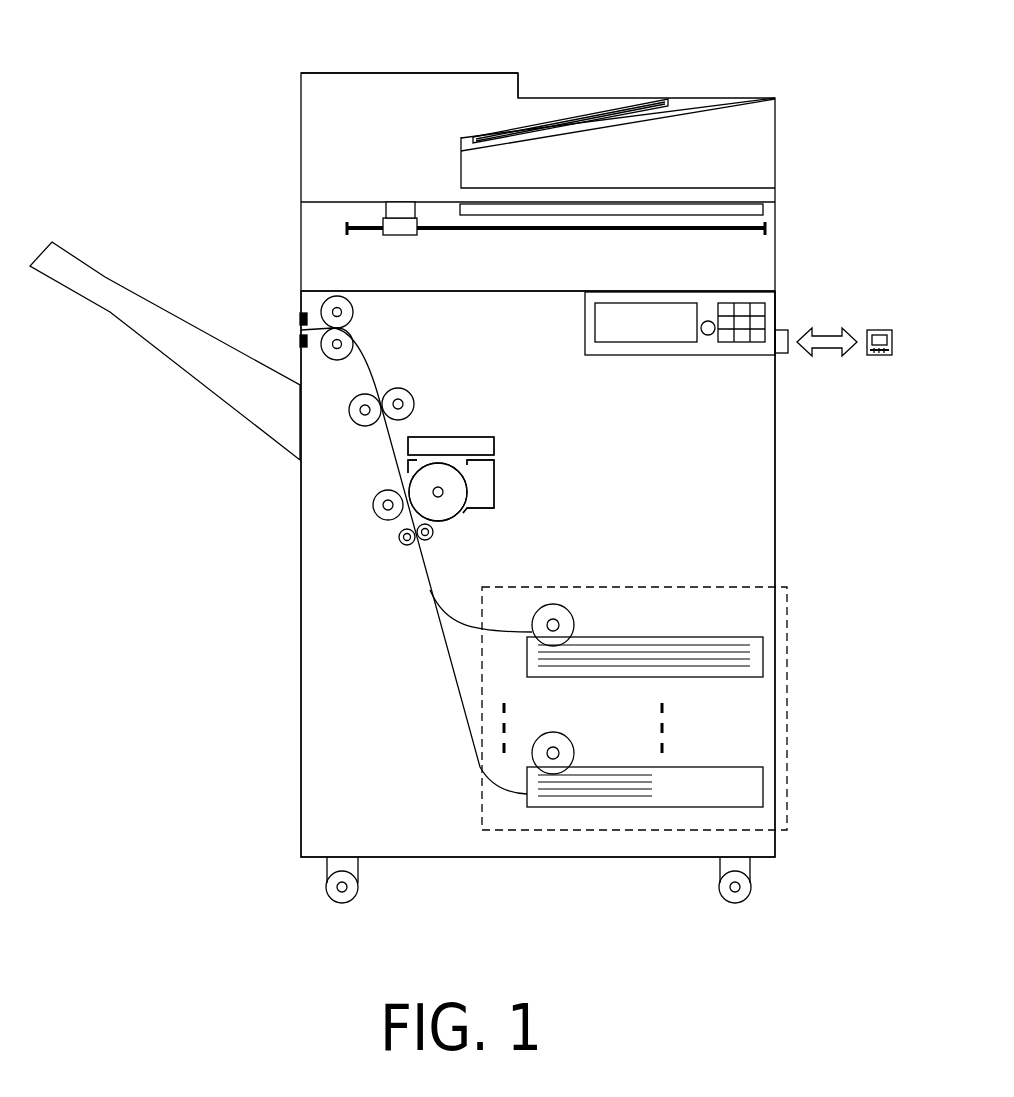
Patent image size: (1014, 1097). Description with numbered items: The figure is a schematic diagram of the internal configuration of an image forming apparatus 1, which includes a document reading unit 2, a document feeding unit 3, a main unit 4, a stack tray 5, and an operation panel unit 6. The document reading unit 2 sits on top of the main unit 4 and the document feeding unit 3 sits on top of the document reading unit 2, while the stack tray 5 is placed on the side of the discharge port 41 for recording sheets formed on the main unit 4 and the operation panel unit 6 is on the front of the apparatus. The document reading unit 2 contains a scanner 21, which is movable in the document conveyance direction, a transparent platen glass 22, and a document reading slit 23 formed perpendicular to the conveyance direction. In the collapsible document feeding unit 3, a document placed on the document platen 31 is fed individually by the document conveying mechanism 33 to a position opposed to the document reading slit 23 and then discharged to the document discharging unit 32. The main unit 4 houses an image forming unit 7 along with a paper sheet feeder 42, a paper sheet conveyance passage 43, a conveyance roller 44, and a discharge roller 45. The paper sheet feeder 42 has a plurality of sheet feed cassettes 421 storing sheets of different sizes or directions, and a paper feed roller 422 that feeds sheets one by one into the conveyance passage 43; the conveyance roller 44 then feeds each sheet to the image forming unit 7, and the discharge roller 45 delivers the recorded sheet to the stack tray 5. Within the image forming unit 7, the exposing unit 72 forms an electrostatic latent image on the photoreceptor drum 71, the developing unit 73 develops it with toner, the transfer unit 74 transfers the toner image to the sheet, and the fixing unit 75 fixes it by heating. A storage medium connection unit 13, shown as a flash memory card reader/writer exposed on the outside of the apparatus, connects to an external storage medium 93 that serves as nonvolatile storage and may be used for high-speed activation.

The image forming apparatus 1 is at (237, 108).
The document reading unit 2 is at (301, 238).
The document feeding unit 3 is at (301, 138).
The main unit 4 is at (775, 547).
The stack tray 5 is at (193, 373).
The operation panel unit 6 is at (770, 308).
The image forming unit 7 is at (573, 445).
The storage medium connection unit 13 is at (785, 357).
The scanner 21 is at (405, 237).
The platen glass 22 is at (765, 205).
The document reading slit 23 is at (403, 207).
The document platen 31 is at (675, 115).
The document discharging unit 32 is at (645, 187).
The document conveying mechanism 33 is at (410, 80).
The discharge port 41 is at (298, 330).
The paper sheet feeder 42 is at (787, 630).
The paper sheet conveyance passage 43 is at (418, 550).
The conveyance roller 44 is at (400, 537).
The discharge roller 45 is at (353, 312).
The photoreceptor drum 71 is at (448, 520).
The exposing unit 72 is at (494, 442).
The developing unit 73 is at (494, 477).
The transfer unit 74 is at (375, 503).
The fixing unit 75 is at (413, 400).
The external storage medium 93 is at (878, 328).
The sheet feed cassette 421 is at (693, 637).
The paper feed roller 422 is at (575, 628).